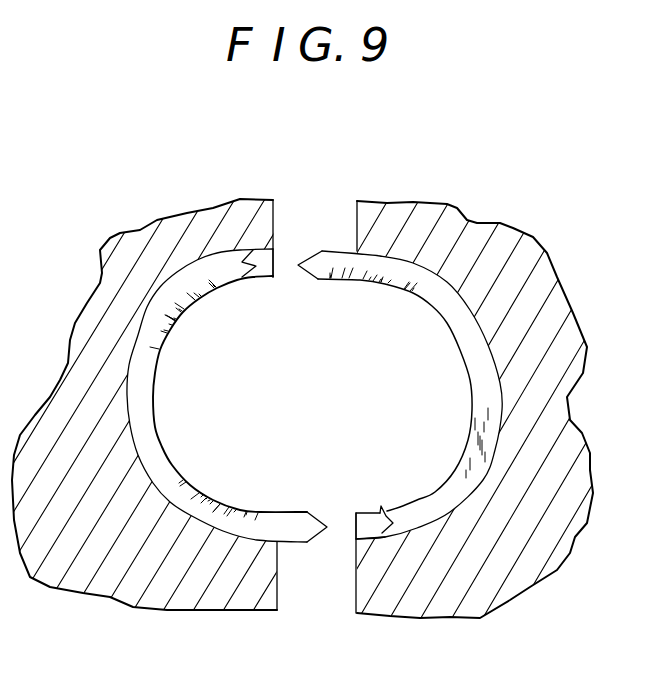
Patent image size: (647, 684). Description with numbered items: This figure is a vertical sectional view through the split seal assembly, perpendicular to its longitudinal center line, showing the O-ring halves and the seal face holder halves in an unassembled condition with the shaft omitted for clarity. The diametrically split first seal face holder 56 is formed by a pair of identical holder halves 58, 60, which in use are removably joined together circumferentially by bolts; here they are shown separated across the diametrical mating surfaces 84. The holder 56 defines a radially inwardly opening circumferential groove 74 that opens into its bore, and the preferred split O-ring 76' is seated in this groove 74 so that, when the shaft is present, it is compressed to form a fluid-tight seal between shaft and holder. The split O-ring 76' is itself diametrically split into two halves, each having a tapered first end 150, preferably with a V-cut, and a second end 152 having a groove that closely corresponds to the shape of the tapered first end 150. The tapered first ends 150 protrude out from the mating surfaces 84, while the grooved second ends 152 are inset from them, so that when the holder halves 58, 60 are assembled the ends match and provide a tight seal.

The first seal face holder 56 is at (323, 342).
The holder half 58 is at (238, 218).
The holder half 60 is at (488, 233).
The diametrical fracture / mating surfaces 84 is at (356, 220).
The split O-ring 76' is at (314, 395).
The first end 150 is at (300, 270).
The radially inwardly opening circumferential groove 74 is at (262, 278).
The second end 152 is at (245, 264).